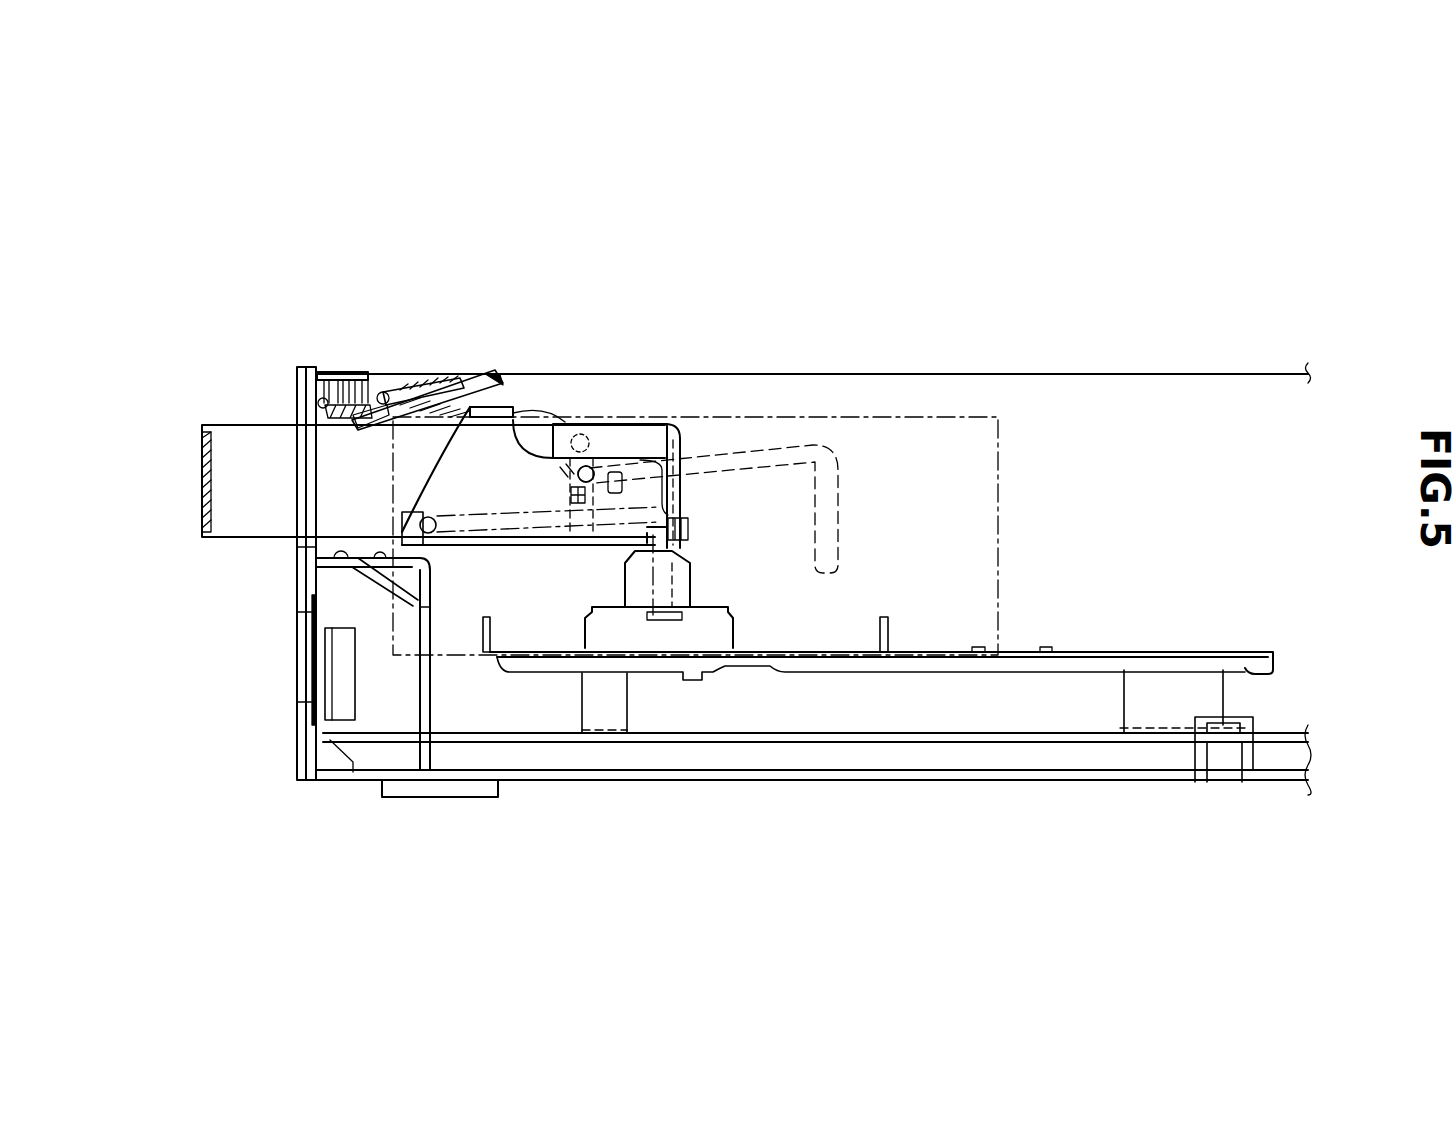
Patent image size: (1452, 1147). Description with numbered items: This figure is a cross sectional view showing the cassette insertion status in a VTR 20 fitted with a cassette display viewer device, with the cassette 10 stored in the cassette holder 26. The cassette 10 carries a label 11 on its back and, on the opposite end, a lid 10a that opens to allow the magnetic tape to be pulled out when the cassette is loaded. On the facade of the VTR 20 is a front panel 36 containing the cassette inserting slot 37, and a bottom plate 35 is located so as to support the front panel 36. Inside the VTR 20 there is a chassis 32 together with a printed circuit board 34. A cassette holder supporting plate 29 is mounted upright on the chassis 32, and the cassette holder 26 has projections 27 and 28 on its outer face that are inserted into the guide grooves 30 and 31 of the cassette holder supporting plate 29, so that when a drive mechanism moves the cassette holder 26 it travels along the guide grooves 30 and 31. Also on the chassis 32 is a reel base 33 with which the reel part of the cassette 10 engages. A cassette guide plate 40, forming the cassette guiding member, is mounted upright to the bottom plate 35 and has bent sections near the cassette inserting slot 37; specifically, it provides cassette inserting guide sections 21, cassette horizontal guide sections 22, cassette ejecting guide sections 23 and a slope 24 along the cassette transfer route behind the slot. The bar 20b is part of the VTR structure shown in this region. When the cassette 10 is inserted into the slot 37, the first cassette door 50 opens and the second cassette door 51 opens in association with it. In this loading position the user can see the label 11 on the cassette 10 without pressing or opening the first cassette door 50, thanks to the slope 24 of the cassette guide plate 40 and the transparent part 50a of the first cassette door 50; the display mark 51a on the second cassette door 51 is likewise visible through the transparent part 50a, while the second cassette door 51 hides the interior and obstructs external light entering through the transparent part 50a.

The cassette 10 is at (205, 422).
The lid 10a is at (660, 442).
The label 11 is at (202, 460).
The VTR 20 is at (915, 373).
The VTR support bar 20b is at (433, 650).
The cassette inserting guide sections 21 is at (340, 548).
The cassette horizontal guide sections 22 is at (378, 552).
The cassette ejecting guide sections 23 is at (403, 575).
The slope 24 is at (380, 555).
The cassette holder 26 is at (490, 442).
The projection 27 is at (437, 520).
The projection 28 is at (590, 466).
The cassette holder supporting plate 29 is at (985, 457).
The guide groove 30 is at (662, 583).
The guide groove 31 is at (828, 532).
The chassis 32 is at (1112, 652).
The reel base 33 is at (723, 636).
The printed circuit board 34 is at (981, 744).
The bottom plate 35 is at (632, 780).
The front panel 36 is at (293, 607).
The cassette inserting slot 37 is at (300, 540).
The cassette guide plate 40 is at (432, 700).
The first cassette door 50 is at (348, 366).
The transparent part 50a is at (372, 366).
The second cassette door 51 is at (407, 366).
The display mark 51a is at (455, 366).